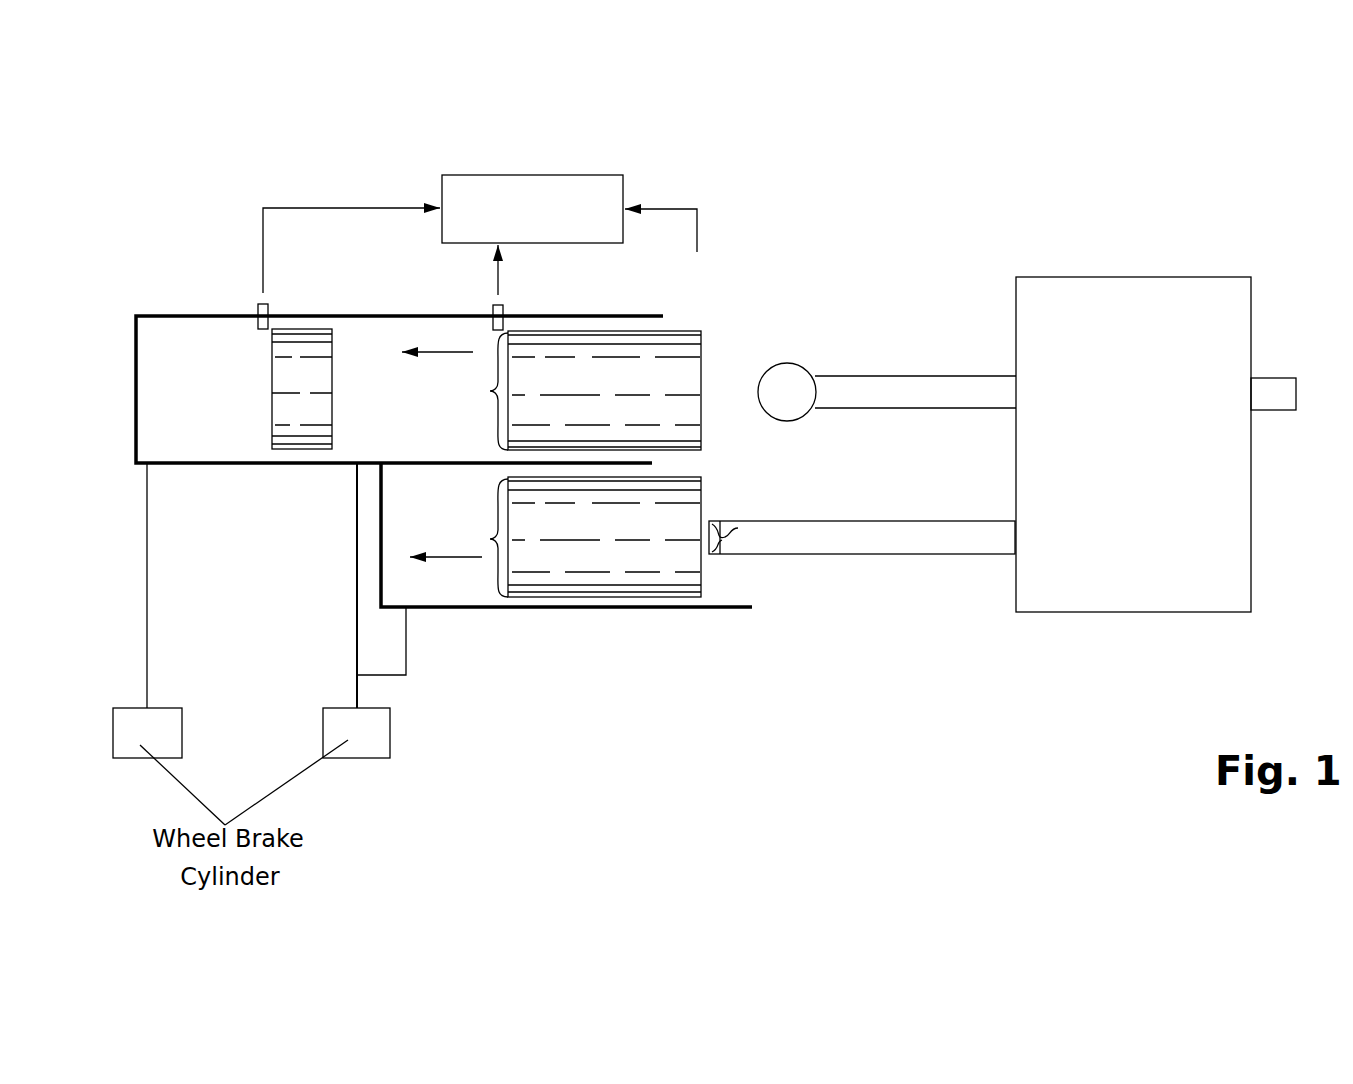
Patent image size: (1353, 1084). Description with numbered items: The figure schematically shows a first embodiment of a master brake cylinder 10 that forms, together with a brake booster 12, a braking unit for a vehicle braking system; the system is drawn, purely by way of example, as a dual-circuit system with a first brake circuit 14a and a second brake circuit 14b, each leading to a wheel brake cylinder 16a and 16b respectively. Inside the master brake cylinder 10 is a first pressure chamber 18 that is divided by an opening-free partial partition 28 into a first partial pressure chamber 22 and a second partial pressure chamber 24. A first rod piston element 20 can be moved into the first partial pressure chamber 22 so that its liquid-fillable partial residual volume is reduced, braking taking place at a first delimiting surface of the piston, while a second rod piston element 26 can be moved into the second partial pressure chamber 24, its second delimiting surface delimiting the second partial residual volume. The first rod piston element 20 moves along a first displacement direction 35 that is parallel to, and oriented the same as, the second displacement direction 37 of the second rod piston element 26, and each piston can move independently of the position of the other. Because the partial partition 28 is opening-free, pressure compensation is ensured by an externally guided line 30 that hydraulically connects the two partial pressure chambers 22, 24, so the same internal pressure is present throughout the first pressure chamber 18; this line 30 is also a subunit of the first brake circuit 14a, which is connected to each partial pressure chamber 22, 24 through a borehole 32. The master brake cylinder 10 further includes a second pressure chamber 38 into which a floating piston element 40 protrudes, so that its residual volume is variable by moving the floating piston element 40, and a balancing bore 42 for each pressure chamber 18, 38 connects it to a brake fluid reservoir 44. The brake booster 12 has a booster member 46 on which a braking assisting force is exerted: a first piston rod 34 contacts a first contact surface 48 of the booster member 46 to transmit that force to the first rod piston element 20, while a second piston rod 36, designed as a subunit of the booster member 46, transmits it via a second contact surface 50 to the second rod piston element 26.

The master brake cylinder 10 is at (640, 610).
The brake booster 12 is at (1090, 184).
The first brake circuit 14a is at (348, 627).
The second brake circuit 14b is at (158, 592).
The wheel brake cylinder 16a is at (390, 735).
The wheel brake cylinder 16b is at (182, 735).
The first pressure chamber 18 is at (415, 422).
The first rod piston element 20 is at (692, 352).
The first partial pressure chamber 22 is at (355, 400).
The second partial pressure chamber 24 is at (451, 578).
The second rod piston element 26 is at (692, 578).
The partial partition 28 is at (645, 466).
The externally guided line 30 is at (357, 598).
The borehole 32 is at (355, 465).
The first piston rod 34 is at (882, 392).
The first displacement direction 35 is at (440, 350).
The second piston rod 36 is at (872, 545).
The second displacement direction 37 is at (440, 556).
The second pressure chamber 38 is at (178, 395).
The floating piston element 40 is at (302, 345).
The balancing bore 42 is at (258, 312).
The brake fluid reservoir 44 is at (531, 175).
The booster member 46 is at (1130, 293).
The first contact surface 48 is at (1020, 408).
The second contact surface 50 is at (738, 528).